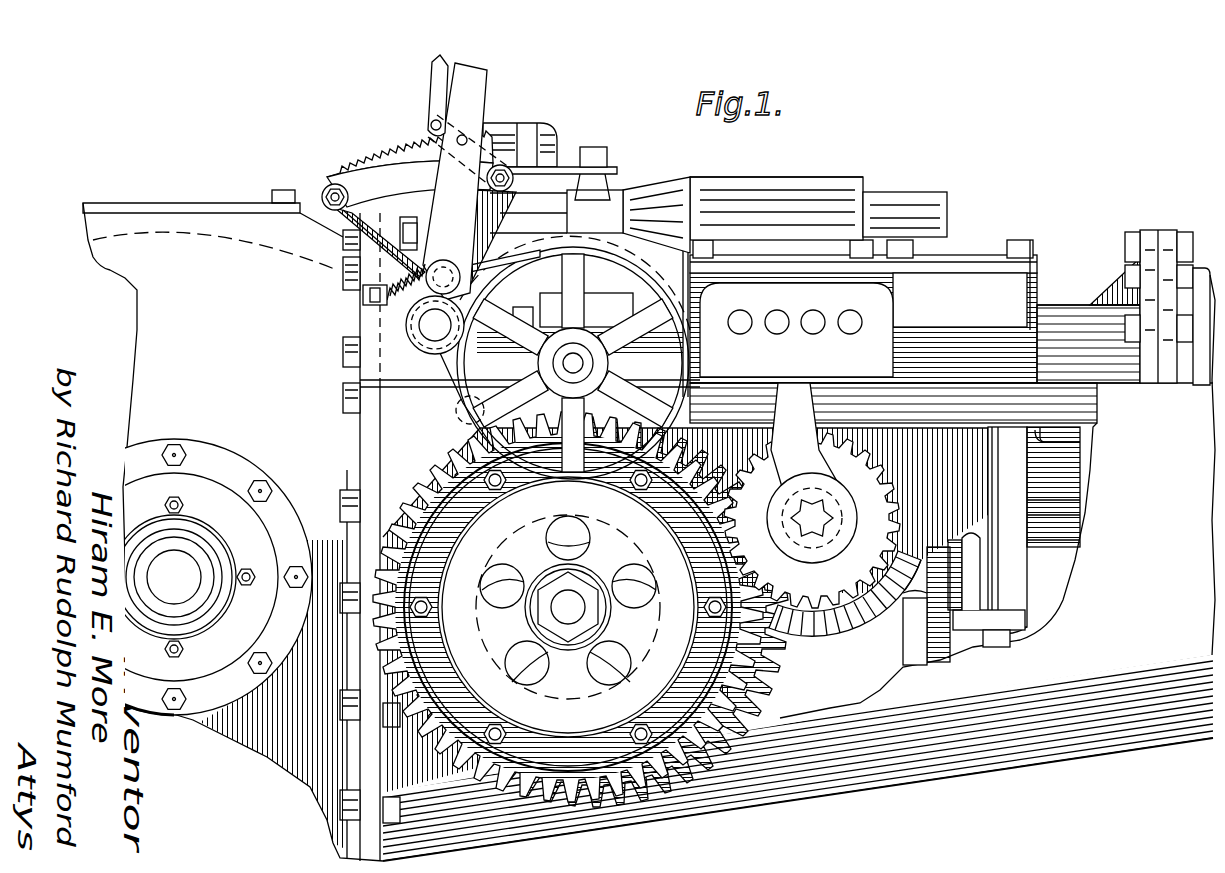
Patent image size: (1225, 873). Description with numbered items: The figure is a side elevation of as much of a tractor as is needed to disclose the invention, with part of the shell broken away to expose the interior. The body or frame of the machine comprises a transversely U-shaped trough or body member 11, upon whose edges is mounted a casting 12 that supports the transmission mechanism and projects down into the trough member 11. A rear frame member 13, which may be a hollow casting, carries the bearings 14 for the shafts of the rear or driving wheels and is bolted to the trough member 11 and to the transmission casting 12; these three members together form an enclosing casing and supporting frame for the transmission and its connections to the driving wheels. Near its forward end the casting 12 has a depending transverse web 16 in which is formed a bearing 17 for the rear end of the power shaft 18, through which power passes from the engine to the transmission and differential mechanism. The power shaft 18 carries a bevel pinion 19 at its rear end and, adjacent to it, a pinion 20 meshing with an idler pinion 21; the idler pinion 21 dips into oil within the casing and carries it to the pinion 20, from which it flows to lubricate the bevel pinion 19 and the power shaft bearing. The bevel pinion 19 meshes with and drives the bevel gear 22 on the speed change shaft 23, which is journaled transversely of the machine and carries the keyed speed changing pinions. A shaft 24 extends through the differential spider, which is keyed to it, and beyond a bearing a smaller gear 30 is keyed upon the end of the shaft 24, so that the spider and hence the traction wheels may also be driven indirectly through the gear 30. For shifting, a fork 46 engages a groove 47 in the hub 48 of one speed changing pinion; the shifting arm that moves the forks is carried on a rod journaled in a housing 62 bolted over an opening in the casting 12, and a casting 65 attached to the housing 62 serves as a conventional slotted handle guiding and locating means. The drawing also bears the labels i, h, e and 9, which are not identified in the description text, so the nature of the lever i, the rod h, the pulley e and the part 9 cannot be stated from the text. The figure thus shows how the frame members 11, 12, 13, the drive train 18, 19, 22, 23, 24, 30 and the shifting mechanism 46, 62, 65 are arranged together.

The lever i is at (490, 80).
The rod h is at (560, 255).
The pulley e is at (573, 363).
The housing 9 is at (687, 277).
The trough or body member 11 is at (1153, 740).
The casting 12 is at (1140, 245).
The rear frame member 13 is at (137, 267).
The bearings 14 is at (180, 497).
The depending transverse web 16 is at (1045, 440).
The bearing 17 is at (1012, 507).
The power shaft 18 is at (1070, 510).
The bevel pinion 19 is at (905, 600).
The pinion 20 is at (937, 547).
The idler pinion 21 is at (942, 650).
The bevel gear 22 is at (830, 627).
The speed change shaft 23 is at (807, 517).
The shaft 24 is at (568, 607).
The smaller gear 30 is at (613, 780).
The fork 46 is at (803, 420).
The groove 47 is at (811, 552).
The hub 48 is at (812, 520).
The housing 62 is at (828, 190).
The casting 65 is at (553, 132).